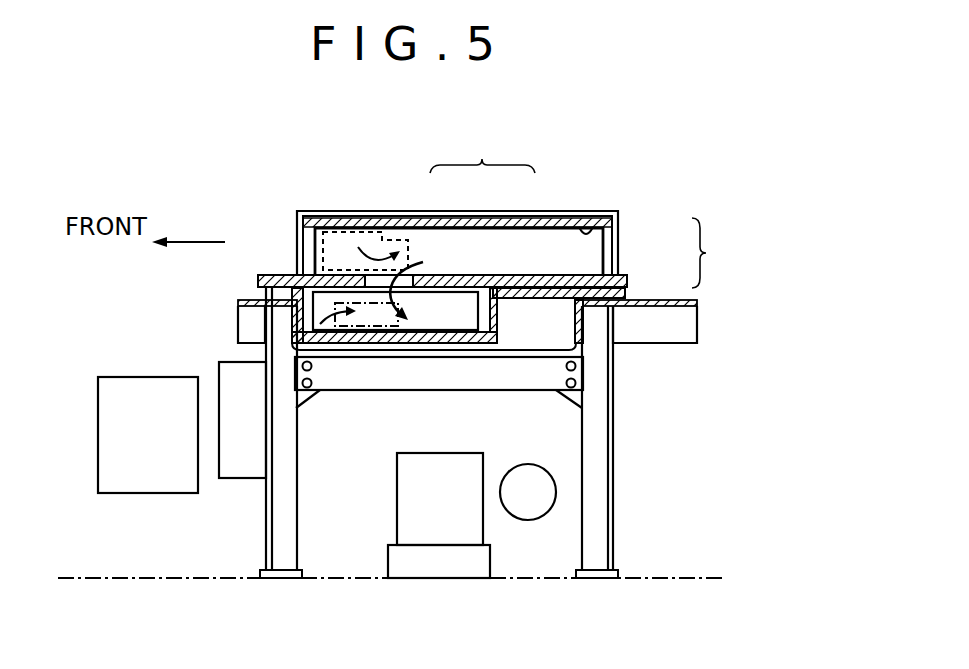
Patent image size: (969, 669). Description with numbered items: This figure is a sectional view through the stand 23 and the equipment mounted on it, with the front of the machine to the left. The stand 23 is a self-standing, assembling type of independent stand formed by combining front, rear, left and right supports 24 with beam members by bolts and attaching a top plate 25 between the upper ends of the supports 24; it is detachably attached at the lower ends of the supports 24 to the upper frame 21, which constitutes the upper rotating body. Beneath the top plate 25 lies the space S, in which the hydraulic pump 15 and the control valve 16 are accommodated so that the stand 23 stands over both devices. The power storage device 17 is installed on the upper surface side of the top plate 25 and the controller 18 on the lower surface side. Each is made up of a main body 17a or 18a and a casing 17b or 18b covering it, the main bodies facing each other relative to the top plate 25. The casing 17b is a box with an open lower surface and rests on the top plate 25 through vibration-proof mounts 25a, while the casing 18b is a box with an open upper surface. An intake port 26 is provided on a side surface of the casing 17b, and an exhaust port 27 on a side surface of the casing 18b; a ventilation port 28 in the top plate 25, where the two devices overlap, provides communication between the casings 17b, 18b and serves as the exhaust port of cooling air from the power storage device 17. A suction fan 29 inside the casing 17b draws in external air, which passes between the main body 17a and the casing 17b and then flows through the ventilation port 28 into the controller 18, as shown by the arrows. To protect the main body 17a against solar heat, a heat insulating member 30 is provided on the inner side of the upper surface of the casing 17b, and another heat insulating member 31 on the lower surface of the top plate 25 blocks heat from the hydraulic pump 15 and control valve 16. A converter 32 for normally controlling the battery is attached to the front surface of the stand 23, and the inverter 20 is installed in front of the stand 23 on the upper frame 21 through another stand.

The hydraulic pump 15 is at (531, 521).
The control valve 16 is at (397, 497).
The power storage device 17 is at (717, 253).
The main body of the power storage device 17a is at (615, 238).
The casing of the power storage device 17b is at (618, 269).
The controller 18 is at (482, 153).
The main body of the controller 18a is at (447, 300).
The casing of the controller 18b is at (505, 292).
The inverter 20 is at (134, 494).
The upper frame 21 is at (696, 572).
The stand 23 is at (624, 457).
The supports 24 is at (266, 534).
The top plate 25 is at (561, 275).
The vibration-proof mounts 25a is at (262, 297).
The intake port 26 is at (348, 209).
The exhaust port 27 is at (372, 318).
The ventilation port 28 is at (405, 273).
The suction fan 29 is at (398, 209).
The heat insulating member 30 is at (594, 223).
The heat insulating member 31 is at (534, 298).
The converter 32 is at (219, 372).
The space S is at (556, 423).